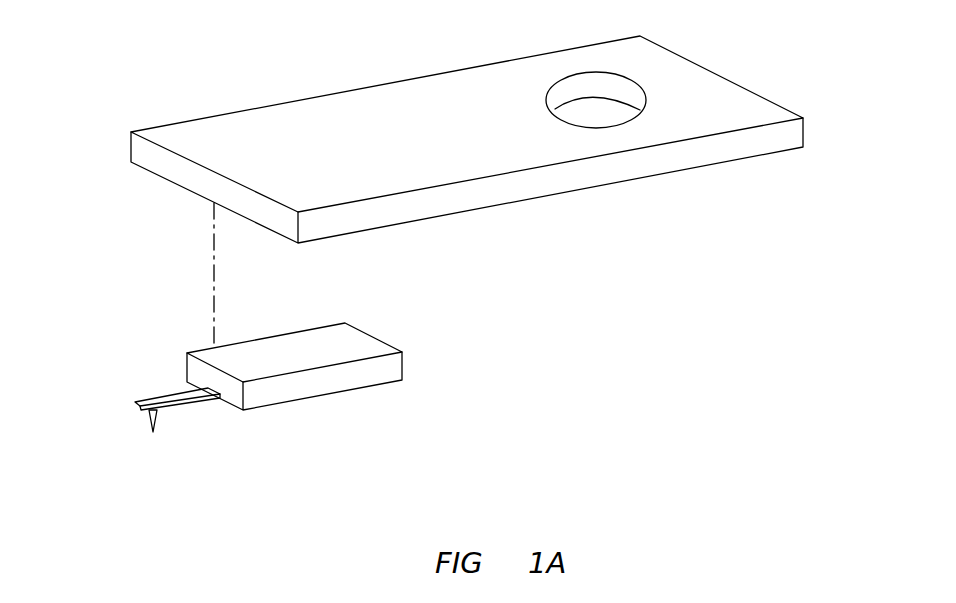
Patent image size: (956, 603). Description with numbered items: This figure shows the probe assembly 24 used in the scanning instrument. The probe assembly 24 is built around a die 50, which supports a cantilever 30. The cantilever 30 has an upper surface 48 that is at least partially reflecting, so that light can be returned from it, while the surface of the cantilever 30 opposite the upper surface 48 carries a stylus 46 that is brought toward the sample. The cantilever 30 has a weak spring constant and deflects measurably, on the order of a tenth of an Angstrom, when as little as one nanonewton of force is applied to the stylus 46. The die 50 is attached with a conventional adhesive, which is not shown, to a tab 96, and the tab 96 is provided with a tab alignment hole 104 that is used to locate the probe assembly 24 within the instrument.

The probe assembly 24 is at (575, 324).
The plate 96 is at (467, 139).
The aperture 104 is at (623, 126).
The probe base 50 is at (402, 363).
The cantilever 48 is at (165, 398).
The probe tip 46 is at (158, 418).
The probe 30 is at (163, 393).